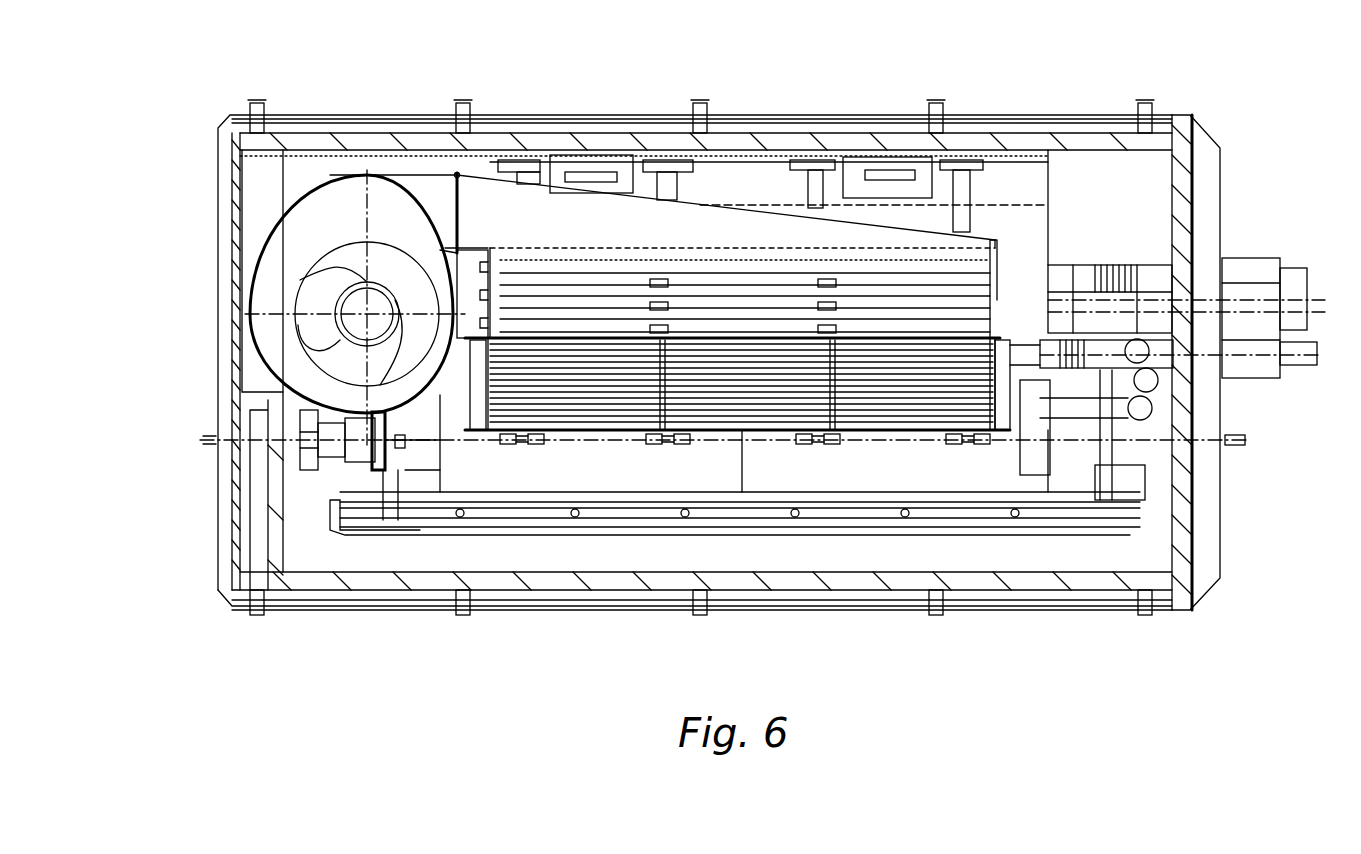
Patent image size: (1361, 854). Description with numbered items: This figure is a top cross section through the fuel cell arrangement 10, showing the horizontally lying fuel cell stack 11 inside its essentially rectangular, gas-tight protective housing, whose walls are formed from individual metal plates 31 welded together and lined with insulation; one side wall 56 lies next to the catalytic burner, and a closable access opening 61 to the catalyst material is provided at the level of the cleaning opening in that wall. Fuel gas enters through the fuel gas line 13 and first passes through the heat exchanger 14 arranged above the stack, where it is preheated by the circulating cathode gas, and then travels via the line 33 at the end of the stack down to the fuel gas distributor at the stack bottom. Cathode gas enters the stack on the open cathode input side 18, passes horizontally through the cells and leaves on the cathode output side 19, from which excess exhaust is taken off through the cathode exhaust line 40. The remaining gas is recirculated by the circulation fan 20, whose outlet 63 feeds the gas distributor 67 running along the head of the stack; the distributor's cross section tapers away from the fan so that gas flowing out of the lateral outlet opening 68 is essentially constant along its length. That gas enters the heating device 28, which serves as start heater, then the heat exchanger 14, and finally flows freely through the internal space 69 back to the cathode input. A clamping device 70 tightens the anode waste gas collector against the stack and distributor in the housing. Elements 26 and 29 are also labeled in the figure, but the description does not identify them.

The fuel cell arrangement 10 is at (1232, 100).
The fuel cell stack 11 is at (850, 470).
The fuel gas line 13 is at (1163, 375).
The heat exchanger 14 is at (585, 400).
The cathode input side 18 is at (640, 500).
The cathode output side 19 is at (428, 265).
The circulation fan 20 is at (278, 325).
The output shaft 26 is at (1295, 272).
The heating device 28 is at (768, 290).
The insulation 29 is at (230, 240).
The metal plates 31 is at (233, 305).
The line 33 is at (1130, 412).
The cathode exhaust line 40 is at (1283, 330).
The side wall 56 is at (958, 140).
The closable access opening 61 is at (620, 162).
The outlet 63 is at (462, 198).
The gas distributor 67 is at (712, 220).
The lateral outlet opening 68 is at (563, 247).
The internal space 69 is at (443, 550).
The clamping device 70 is at (910, 508).